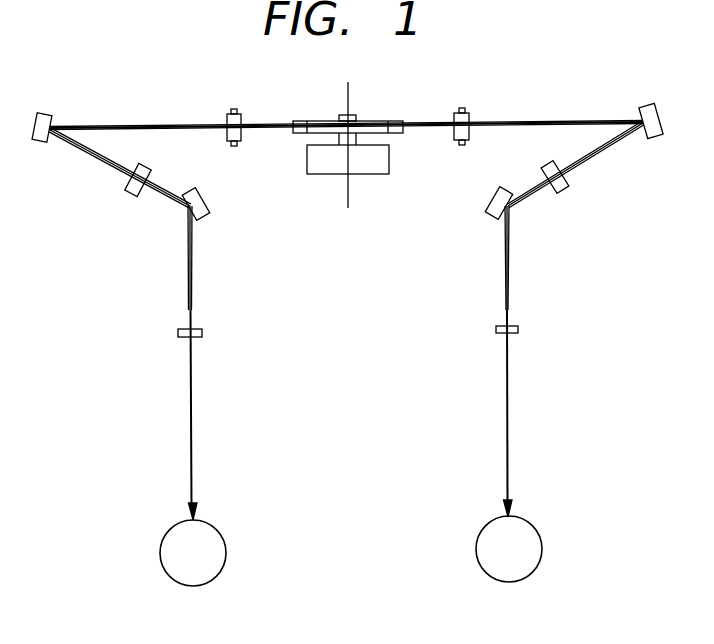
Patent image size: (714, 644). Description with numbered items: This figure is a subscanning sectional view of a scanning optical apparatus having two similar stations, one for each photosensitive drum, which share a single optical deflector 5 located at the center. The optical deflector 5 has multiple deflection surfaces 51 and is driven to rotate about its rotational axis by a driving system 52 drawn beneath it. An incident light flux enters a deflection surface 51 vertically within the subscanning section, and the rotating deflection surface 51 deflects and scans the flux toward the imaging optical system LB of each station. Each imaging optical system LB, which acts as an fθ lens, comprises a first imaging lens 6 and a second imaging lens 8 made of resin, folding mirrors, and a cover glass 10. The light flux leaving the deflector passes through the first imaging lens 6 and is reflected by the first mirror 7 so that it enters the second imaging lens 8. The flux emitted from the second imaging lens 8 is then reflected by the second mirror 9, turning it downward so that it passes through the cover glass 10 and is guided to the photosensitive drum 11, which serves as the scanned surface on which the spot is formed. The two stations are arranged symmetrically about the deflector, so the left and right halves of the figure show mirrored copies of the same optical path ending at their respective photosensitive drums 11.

The optical deflector 5 is at (355, 113).
The deflection surface 51 is at (302, 121).
The driving system 52 is at (327, 174).
The first imaging lens 6 is at (233, 110).
The first mirror 7 is at (43, 113).
The second imaging lens 8 is at (132, 188).
The second mirror 9 is at (203, 214).
The cover glass 10 is at (178, 333).
The photosensitive drum 11 is at (172, 528).
The imaging optical system LB is at (249, 140).